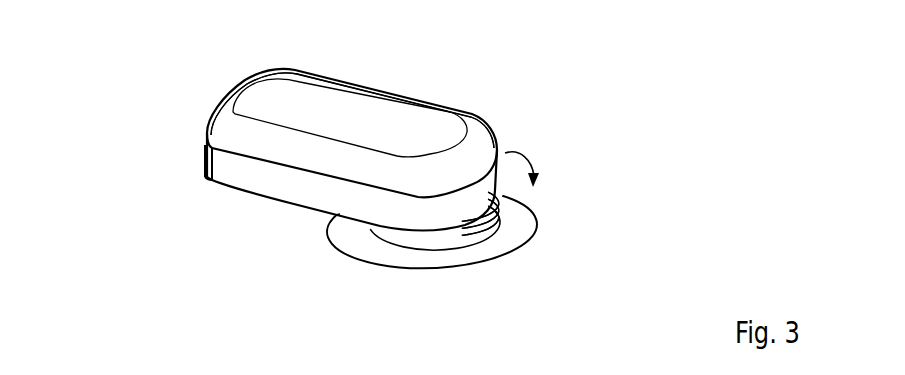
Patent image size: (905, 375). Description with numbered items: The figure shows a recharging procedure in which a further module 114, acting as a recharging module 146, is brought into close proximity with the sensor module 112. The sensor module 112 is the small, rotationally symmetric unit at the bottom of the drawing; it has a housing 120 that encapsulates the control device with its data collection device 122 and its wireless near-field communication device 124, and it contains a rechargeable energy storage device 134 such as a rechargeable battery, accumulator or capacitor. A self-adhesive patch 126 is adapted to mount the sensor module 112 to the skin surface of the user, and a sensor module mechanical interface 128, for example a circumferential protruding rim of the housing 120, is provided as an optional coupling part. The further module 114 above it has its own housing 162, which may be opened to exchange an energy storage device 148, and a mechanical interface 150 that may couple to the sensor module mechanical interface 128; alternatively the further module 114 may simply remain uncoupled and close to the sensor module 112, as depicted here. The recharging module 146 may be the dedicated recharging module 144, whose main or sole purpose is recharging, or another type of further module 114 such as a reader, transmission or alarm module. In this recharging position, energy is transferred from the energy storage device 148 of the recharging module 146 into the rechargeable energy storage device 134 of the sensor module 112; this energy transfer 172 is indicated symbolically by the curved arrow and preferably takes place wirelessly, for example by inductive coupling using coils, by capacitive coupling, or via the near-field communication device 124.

The sensor module 112 is at (572, 219).
The further module 114 is at (222, 60).
The housing 120 is at (390, 235).
The data collection device 122 is at (496, 243).
The wireless near-field communication device 124 is at (496, 243).
The self-adhesive patch 126 is at (347, 238).
The sensor module mechanical interface 128 is at (453, 235).
The rechargeable energy storage device 134 is at (496, 243).
The dedicated recharging module 144 is at (188, 97).
The recharging module 146 is at (188, 97).
The energy storage device 148 is at (262, 162).
The mechanical interface 150 is at (192, 168).
The housing 162 is at (282, 192).
The energy transfer 172 is at (537, 155).